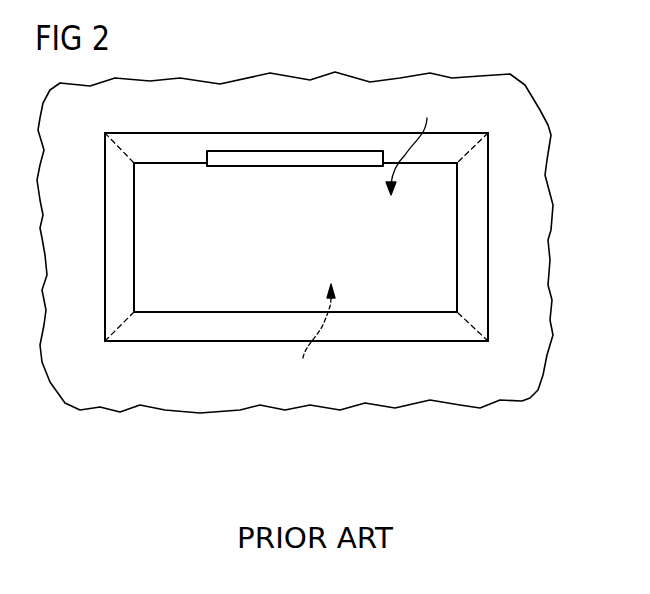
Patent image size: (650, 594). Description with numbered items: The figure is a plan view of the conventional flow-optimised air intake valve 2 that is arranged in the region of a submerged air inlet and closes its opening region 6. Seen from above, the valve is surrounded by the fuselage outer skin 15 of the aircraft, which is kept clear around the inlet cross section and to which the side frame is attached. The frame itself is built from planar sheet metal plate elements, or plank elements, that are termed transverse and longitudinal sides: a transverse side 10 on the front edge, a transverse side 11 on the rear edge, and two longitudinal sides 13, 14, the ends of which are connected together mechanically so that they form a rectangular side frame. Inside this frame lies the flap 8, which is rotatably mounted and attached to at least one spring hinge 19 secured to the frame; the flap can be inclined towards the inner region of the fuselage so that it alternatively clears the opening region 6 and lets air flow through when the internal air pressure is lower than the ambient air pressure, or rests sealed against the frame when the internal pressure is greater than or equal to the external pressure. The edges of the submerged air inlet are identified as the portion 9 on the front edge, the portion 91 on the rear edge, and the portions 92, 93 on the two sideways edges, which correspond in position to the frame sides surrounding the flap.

The air intake valve 2 is at (409, 142).
The opening region 6 is at (316, 335).
The flap 8 is at (212, 302).
The portion on the front edge 9 is at (190, 163).
The transverse side on the front edge 10 is at (182, 146).
The transverse side on the rear edge 11 is at (267, 331).
The longitudinal side 13 is at (480, 233).
The longitudinal side 14 is at (115, 245).
The outer skin of fuselage 15 is at (533, 193).
The spring hinge 19 is at (318, 160).
The portion on the rear edge 91 is at (297, 312).
The portion on the sideways edge 92 is at (134, 238).
The portion on the sideways edge 93 is at (457, 237).